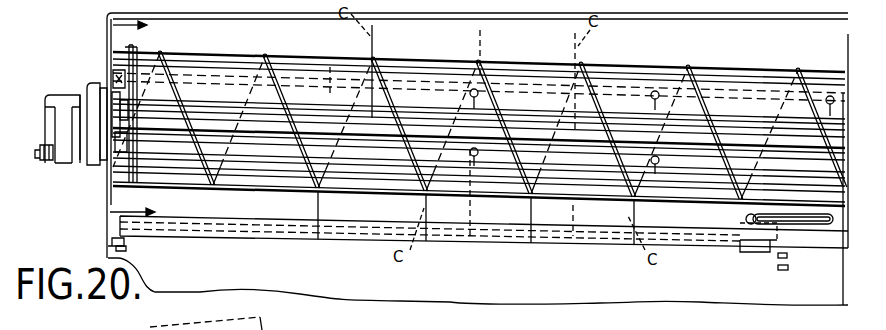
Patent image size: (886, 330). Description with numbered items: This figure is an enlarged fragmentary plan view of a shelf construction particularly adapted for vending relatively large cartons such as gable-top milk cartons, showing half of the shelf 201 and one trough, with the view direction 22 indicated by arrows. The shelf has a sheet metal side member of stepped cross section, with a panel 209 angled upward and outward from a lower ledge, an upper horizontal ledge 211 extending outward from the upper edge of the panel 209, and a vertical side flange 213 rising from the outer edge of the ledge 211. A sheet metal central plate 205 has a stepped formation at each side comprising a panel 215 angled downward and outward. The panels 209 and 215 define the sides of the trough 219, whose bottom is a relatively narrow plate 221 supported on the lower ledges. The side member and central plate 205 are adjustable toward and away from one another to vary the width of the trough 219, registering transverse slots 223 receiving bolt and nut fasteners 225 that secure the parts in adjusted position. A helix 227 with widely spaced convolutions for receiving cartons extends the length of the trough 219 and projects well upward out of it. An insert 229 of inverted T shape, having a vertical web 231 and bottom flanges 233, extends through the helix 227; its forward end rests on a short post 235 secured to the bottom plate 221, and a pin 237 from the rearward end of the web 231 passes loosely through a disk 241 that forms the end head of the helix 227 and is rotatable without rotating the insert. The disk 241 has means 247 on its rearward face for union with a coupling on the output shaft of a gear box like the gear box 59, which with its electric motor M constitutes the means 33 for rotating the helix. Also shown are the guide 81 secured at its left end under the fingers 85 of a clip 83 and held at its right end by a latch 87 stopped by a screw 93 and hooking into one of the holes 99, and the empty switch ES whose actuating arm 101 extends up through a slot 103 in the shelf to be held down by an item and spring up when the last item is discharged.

The direction of travel arrow 22 is at (135, 118).
The means for rotating each helix 33 is at (50, 163).
The speed-reducing gear box 59 is at (90, 98).
The guide 81 is at (343, 236).
The clip 83 is at (108, 246).
The fingers 85 is at (126, 247).
The latch 87 is at (803, 250).
The screw 93 is at (763, 240).
The holes 99 is at (779, 258).
The actuating arm 101 is at (802, 222).
The slot 103 is at (746, 214).
The shelf 201 is at (74, 231).
The central plate 205 is at (368, 290).
The panel 209 is at (549, 72).
The upper horizontal ledge 211 is at (720, 61).
The vertical side flange 213 is at (615, 33).
The panel 215 is at (368, 188).
The trough 219 is at (665, 198).
The bottom plate 221 is at (163, 158).
The transverse slots 223 is at (115, 63).
The bolt and nut fasteners 225 is at (117, 88).
The helix 227 is at (181, 76).
The insert 229 is at (238, 183).
The vertical web 231 is at (246, 168).
The bottom flanges 233 is at (241, 76).
The post 235 is at (762, 120).
The pin 237 is at (158, 142).
The disk 241 is at (130, 47).
The means for union with coupling 247 is at (102, 84).
The electric motor M is at (48, 120).
The empty switch ES is at (735, 233).